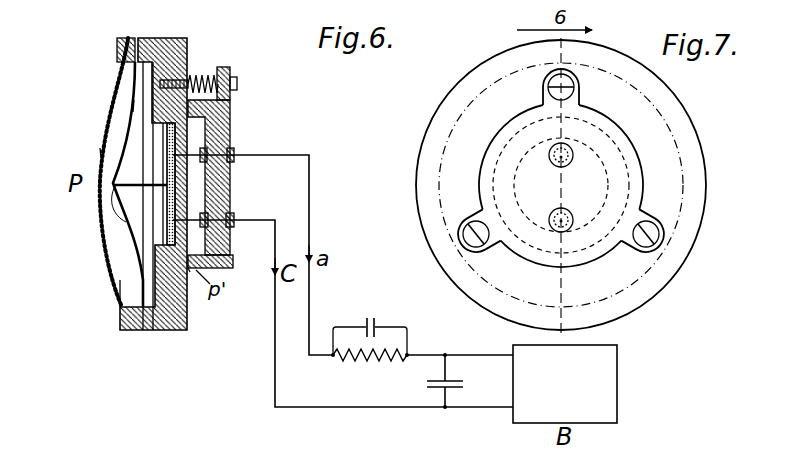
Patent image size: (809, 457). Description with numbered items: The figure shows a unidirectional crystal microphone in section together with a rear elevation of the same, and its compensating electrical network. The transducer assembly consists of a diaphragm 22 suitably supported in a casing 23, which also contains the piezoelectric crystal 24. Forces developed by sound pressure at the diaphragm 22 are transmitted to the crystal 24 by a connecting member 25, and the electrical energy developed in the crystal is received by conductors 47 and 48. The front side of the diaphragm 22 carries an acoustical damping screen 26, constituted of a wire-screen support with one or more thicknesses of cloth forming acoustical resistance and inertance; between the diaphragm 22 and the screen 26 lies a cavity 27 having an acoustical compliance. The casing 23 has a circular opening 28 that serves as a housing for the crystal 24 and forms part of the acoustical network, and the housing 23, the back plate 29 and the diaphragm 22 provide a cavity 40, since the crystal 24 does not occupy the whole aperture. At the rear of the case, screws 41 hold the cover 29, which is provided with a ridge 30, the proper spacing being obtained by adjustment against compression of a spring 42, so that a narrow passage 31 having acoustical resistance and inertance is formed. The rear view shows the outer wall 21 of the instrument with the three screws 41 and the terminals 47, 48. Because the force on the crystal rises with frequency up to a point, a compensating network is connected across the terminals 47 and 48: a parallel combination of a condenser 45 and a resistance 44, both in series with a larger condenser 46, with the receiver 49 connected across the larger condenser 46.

In FIG. 6, the outer casing 21 is at (143, 331).
In FIG. 7, the outer casing 21 is at (432, 206).
In FIG. 6, the diaphragm 22 is at (133, 108).
In FIG. 6, the casing 23 is at (163, 50).
In FIG. 7, the casing 23 is at (433, 139).
In FIG. 6, the piezoelectric crystal 24 is at (176, 178).
In FIG. 6, the connecting member 25 is at (113, 203).
In FIG. 6, the acoustical damping screen 26 is at (101, 164).
In FIG. 6, the cavity 27 is at (100, 152).
In FIG. 6, the circular opening 28 is at (156, 158).
In FIG. 6, the back plate 29 is at (232, 104).
In FIG. 7, the back plate 29 is at (505, 133).
In FIG. 6, the ridge 30 is at (198, 268).
In FIG. 6, the narrow passage 31 is at (192, 271).
In FIG. 6, the cavity 40 is at (140, 132).
In FIG. 6, the screws 41 is at (232, 70).
In FIG. 7, the screws 41 is at (576, 96).
In FIG. 6, the spring 42 is at (200, 79).
In FIG. 6, the resistance 44 is at (370, 358).
In FIG. 6, the condenser 45 is at (373, 316).
In FIG. 6, the larger condenser 46 is at (456, 385).
In FIG. 6, the conductor 47 is at (250, 153).
In FIG. 7, the conductor 47 is at (566, 157).
In FIG. 6, the conductor 48 is at (238, 223).
In FIG. 7, the conductor 48 is at (568, 220).
In FIG. 6, the receiver 49 is at (565, 384).